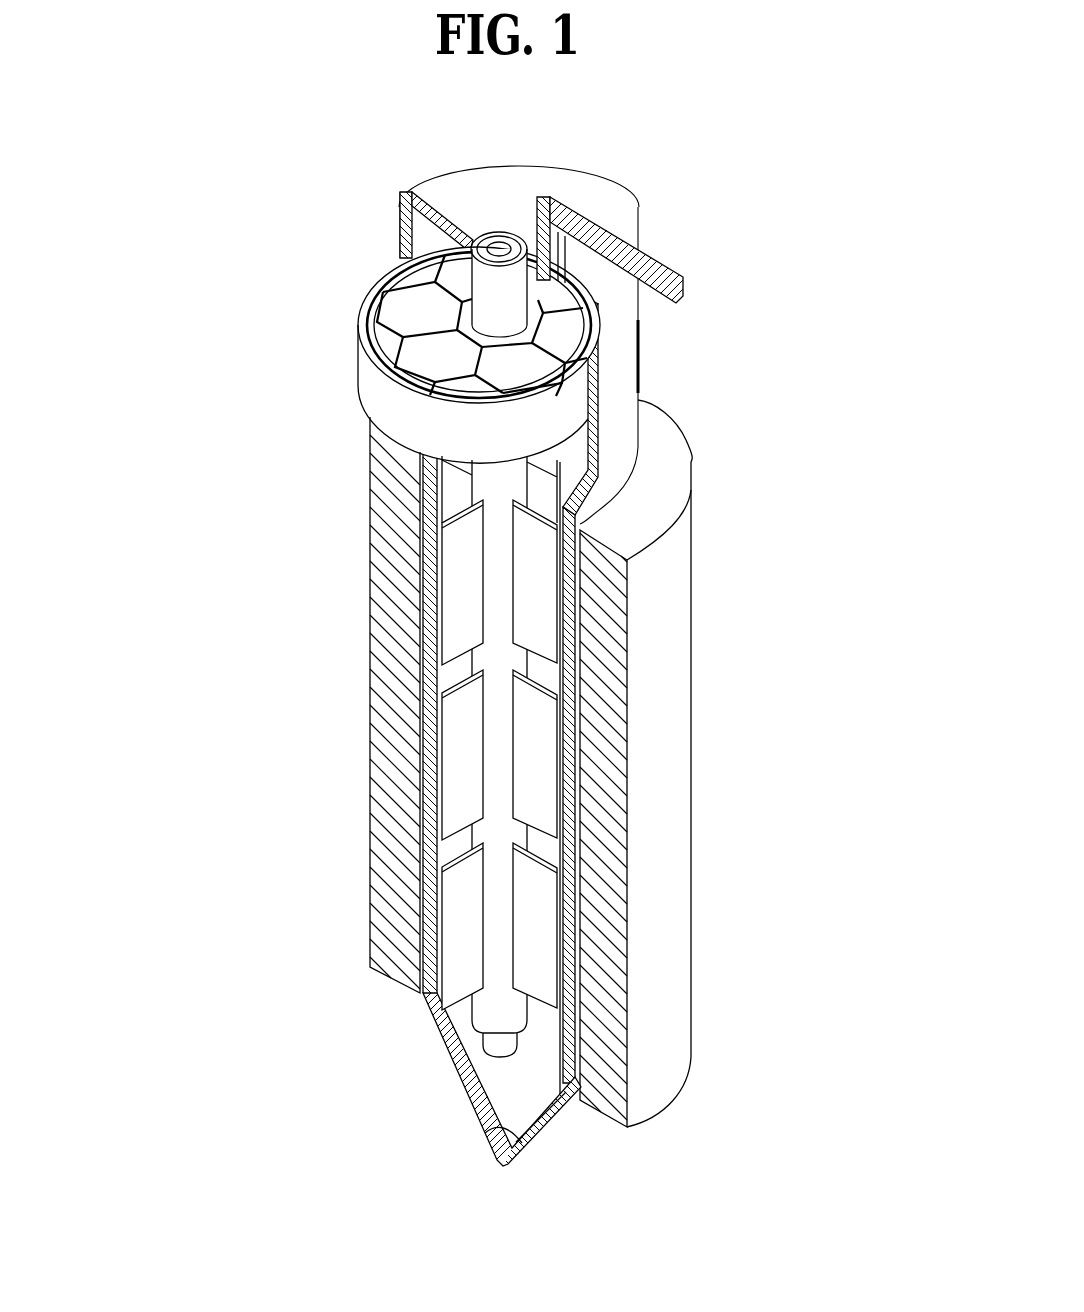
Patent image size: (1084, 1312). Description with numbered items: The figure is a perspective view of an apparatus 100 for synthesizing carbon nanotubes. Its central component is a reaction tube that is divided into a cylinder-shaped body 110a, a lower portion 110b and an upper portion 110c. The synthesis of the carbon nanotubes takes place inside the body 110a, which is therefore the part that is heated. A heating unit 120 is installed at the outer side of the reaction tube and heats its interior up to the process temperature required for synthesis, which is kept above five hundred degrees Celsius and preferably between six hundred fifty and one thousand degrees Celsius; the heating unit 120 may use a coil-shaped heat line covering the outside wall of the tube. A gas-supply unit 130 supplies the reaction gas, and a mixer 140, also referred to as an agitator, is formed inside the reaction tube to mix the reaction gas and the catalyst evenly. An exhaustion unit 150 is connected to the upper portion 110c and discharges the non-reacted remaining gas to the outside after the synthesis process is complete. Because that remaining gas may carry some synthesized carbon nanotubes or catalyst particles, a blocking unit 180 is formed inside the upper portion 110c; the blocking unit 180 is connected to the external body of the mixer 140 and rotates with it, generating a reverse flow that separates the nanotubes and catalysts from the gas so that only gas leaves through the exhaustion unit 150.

The apparatus for synthesizing carbon nanotubes 100 is at (510, 673).
The body 110a is at (577, 630).
The lower portion 110b is at (558, 1118).
The upper portion 110c is at (623, 373).
The heating unit 120 is at (688, 737).
The gas-supply unit 130 is at (493, 1050).
The mixer 140 is at (493, 292).
The exhaustion unit 150 is at (690, 284).
The blocking unit 180 is at (400, 402).